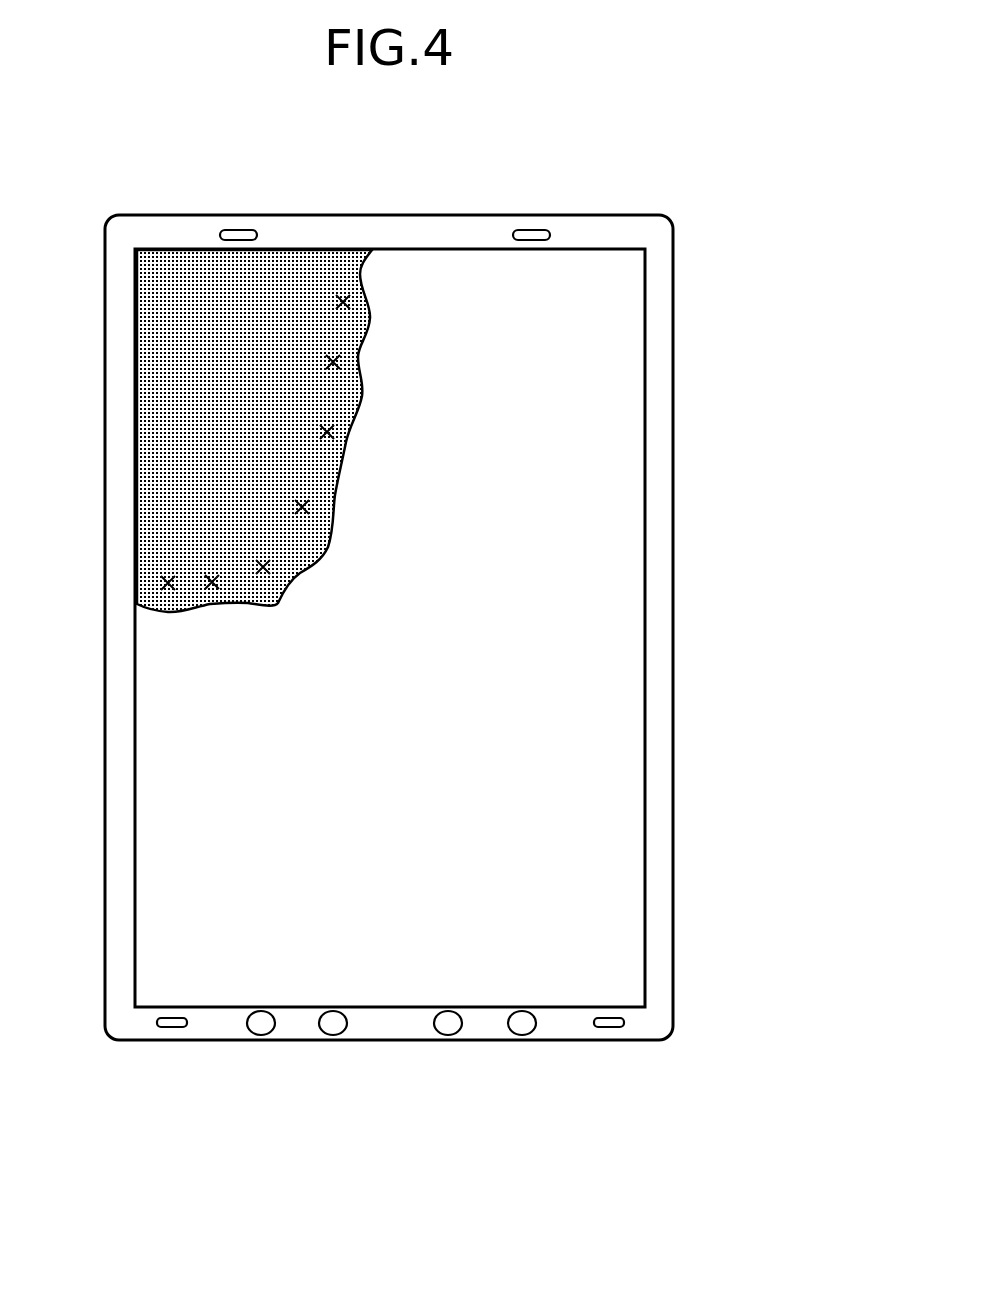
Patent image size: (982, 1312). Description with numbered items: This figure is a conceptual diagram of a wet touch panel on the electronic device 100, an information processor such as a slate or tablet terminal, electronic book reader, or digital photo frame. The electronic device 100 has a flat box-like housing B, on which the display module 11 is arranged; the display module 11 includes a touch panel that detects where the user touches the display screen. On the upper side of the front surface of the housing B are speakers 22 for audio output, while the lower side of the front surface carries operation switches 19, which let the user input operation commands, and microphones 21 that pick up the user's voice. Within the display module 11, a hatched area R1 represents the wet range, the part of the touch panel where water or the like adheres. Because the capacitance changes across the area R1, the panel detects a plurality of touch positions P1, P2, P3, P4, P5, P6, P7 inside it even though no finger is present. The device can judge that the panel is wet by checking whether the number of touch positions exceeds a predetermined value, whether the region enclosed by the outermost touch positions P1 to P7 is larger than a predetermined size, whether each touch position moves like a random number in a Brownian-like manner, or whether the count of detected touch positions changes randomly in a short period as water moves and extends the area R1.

The electronic device 100 is at (451, 648).
The housing B is at (673, 380).
The display module 11 is at (645, 513).
The speakers 22 is at (238, 228).
The microphones 21 is at (173, 1030).
The operation switches 19 is at (240, 1033).
The area R1 is at (185, 283).
The touch position P1 is at (345, 304).
The touch position P2 is at (336, 364).
The touch position P3 is at (330, 434).
The touch position P4 is at (305, 509).
The touch position P5 is at (266, 569).
The touch position P6 is at (212, 586).
The touch position P7 is at (168, 587).